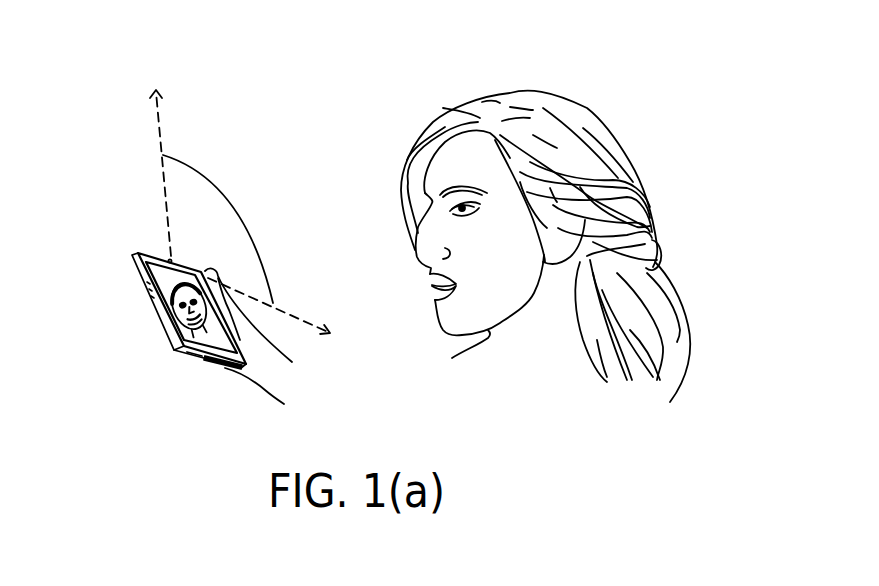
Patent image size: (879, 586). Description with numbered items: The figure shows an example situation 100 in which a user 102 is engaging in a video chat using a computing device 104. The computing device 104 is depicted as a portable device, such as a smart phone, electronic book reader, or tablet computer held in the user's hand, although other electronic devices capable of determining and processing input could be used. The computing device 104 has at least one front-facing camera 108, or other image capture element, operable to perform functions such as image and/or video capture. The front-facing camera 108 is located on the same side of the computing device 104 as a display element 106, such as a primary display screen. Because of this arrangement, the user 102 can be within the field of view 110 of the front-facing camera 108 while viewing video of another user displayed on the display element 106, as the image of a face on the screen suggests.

The example situation 100 is at (751, 95).
The user 102 is at (370, 158).
The computing device 104 is at (140, 282).
The display element 106 is at (174, 318).
The front-facing camera 108 is at (170, 259).
The field of view 110 is at (276, 199).